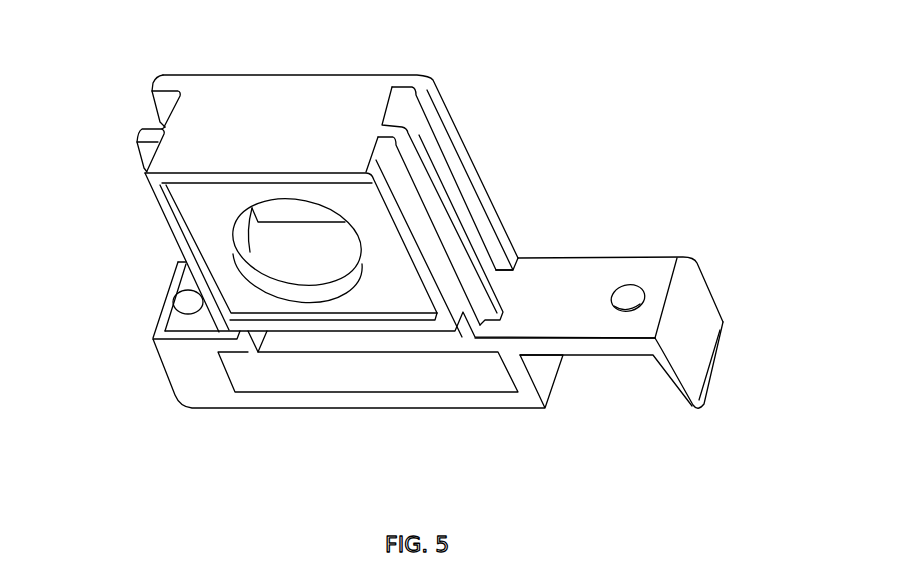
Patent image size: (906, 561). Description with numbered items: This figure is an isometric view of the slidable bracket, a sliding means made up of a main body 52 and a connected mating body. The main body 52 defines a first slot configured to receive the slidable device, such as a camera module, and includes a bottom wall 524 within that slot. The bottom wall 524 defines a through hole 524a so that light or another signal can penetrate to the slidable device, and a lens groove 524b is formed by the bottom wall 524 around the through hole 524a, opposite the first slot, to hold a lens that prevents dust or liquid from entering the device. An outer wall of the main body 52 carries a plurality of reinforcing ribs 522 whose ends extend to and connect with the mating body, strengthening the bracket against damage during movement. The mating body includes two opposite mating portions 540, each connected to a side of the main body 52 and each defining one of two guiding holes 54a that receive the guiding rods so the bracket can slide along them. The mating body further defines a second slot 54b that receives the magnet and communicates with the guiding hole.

The main body 52 is at (277, 97).
The reinforcing ribs 522 is at (417, 160).
The bottom wall 524 is at (202, 212).
The through hole 524a is at (238, 250).
The lens groove 524b is at (162, 186).
The guiding holes 54a is at (188, 303).
The second slot 54b is at (617, 380).
The mating portions 540 is at (195, 368).